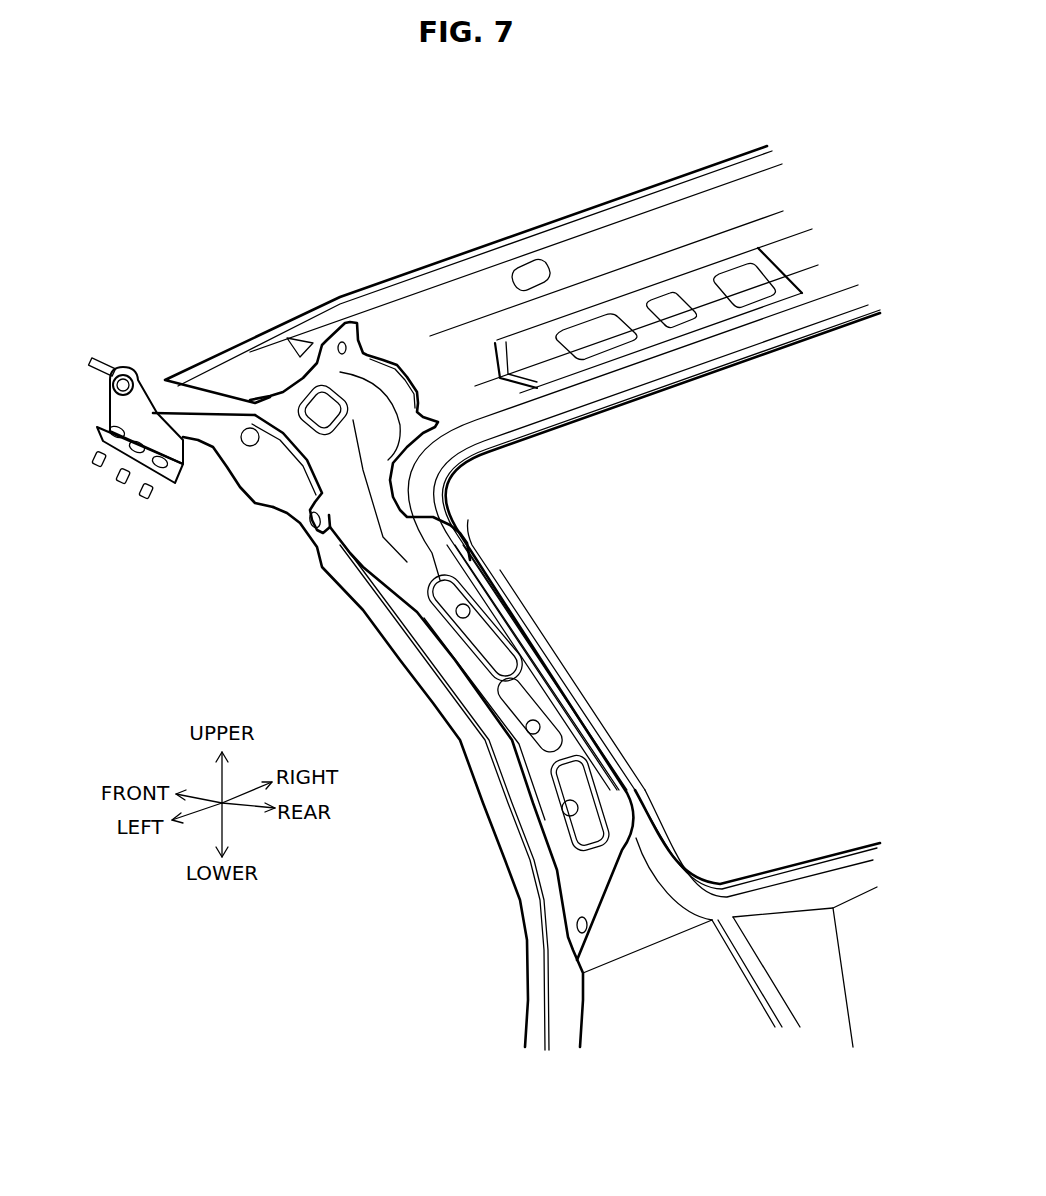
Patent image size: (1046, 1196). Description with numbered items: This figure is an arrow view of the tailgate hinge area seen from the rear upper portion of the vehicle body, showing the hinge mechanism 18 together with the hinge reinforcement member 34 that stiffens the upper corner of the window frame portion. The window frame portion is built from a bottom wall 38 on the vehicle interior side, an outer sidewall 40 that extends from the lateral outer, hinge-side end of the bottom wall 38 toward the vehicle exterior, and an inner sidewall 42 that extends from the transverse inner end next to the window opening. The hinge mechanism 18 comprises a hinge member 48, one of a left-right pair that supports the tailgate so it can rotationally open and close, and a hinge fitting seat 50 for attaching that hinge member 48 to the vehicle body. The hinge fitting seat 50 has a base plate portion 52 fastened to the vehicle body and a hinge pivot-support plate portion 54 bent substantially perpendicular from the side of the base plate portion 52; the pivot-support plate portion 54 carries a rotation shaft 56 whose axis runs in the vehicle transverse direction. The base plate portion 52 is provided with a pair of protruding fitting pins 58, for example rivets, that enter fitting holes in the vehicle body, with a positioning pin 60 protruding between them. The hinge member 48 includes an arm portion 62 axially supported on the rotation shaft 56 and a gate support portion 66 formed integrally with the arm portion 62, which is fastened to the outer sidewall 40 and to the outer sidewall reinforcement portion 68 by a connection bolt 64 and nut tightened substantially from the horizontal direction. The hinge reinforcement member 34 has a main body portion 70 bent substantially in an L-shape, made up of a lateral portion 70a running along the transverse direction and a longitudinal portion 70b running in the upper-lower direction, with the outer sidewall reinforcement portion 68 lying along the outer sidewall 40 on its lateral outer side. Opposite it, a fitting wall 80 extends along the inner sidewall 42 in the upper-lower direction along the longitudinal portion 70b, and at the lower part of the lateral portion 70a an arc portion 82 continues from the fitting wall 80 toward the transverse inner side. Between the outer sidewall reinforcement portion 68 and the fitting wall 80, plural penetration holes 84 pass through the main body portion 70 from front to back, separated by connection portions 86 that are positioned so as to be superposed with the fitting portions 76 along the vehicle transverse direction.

The hinge mechanism 18 is at (193, 487).
The hinge reinforcement member 34 is at (582, 708).
The bottom wall 38 is at (428, 567).
The outer sidewall 40 is at (433, 697).
The inner sidewall 42 is at (543, 677).
The hinge member 48 is at (233, 487).
The hinge fitting seat 50 is at (119, 430).
The base plate portion 52 is at (115, 466).
The hinge pivot-support plate portion 54 is at (128, 400).
The rotation shaft 56 is at (125, 376).
The fitting pin 58 is at (105, 458).
The positioning pin 60 is at (124, 482).
The arm portion 62 is at (110, 364).
The connection bolt 64 is at (253, 447).
The gate support portion 66 is at (226, 440).
The outer sidewall reinforcement portion 68 is at (414, 612).
The main body portion 70 is at (632, 796).
The lateral portion 70a is at (305, 377).
The longitudinal portion 70b is at (597, 745).
The fitting portion 76 is at (520, 767).
The fitting wall 80 is at (520, 637).
The arc portion 82 is at (450, 455).
The penetration hole 84 is at (350, 425).
The connection portion 86 is at (557, 758).